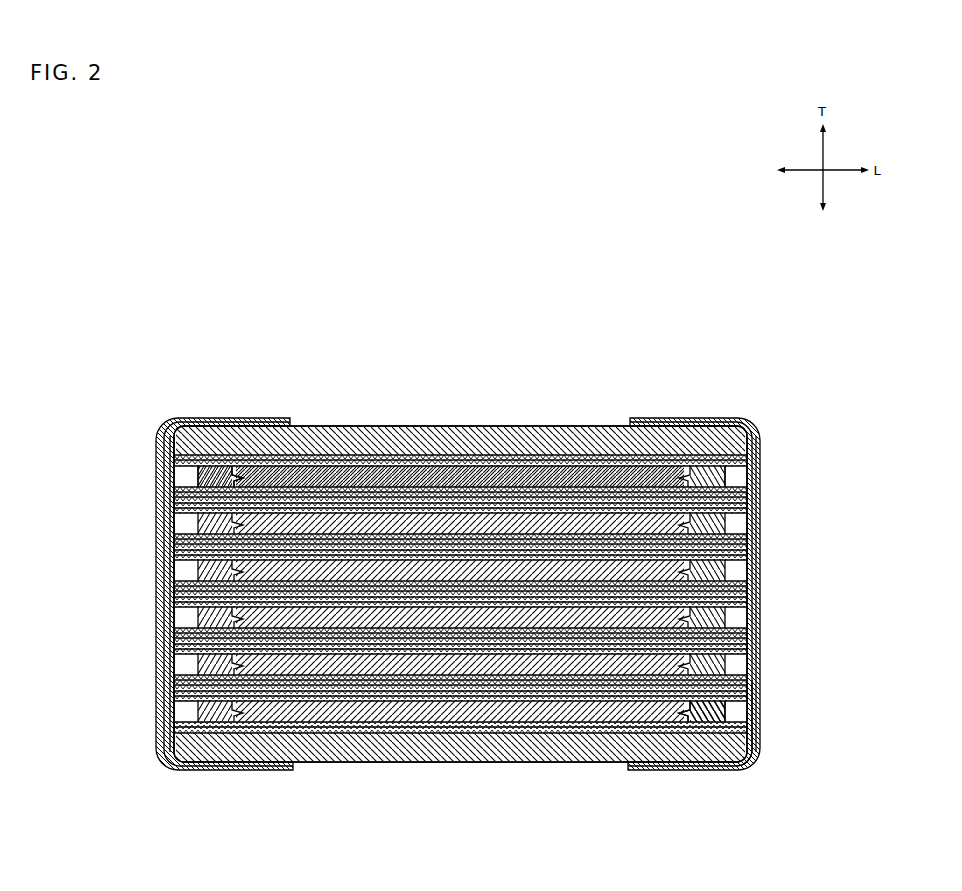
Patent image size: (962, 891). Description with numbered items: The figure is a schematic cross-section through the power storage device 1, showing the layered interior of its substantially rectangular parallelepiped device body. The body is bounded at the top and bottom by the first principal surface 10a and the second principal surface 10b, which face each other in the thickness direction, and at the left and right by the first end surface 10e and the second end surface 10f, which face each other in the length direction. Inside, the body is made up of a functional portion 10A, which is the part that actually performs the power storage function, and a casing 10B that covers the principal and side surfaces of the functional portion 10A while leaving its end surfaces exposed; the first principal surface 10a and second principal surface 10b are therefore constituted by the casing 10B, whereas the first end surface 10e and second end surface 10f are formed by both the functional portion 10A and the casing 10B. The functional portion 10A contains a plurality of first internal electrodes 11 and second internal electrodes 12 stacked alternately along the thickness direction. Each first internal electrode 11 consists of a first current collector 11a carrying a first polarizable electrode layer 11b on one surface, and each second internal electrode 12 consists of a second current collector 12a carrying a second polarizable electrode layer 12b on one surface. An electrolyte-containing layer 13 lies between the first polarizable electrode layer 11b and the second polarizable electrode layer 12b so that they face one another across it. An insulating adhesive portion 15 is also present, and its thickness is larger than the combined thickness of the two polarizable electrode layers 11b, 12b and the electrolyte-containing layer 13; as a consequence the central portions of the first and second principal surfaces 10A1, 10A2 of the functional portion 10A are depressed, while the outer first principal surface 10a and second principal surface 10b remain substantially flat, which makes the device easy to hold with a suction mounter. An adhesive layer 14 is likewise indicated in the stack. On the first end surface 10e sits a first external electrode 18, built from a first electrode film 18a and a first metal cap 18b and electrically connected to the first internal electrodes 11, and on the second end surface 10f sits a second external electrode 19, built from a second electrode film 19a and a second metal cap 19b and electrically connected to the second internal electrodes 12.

The power storage device 1 is at (706, 324).
The first principal surface 10a is at (428, 428).
The second principal surface 10b is at (510, 765).
The first end surface 10e is at (172, 605).
The second end surface 10f is at (758, 615).
The functional portion 10A is at (352, 737).
The first principal surface of functional portion 10A1 is at (558, 462).
The second principal surface of functional portion 10A2 is at (487, 737).
The casing 10B is at (413, 770).
The first internal electrode 11 is at (358, 345).
The first current collector 11a is at (280, 498).
The first polarizable electrode layer 11b is at (352, 485).
The second internal electrode 12 is at (672, 822).
The second current collector 12a is at (623, 700).
The second polarizable electrode layer 12b is at (682, 700).
The electrolyte-containing layer 13 is at (622, 497).
The adhesive layer 14 is at (762, 700).
The insulating adhesive portion 15 is at (730, 472).
The first external electrode 18 is at (174, 594).
The first electrode film 18a is at (166, 505).
The first metal cap 18b is at (168, 552).
The second external electrode 19 is at (743, 594).
The second electrode film 19a is at (750, 485).
The second metal cap 19b is at (760, 515).